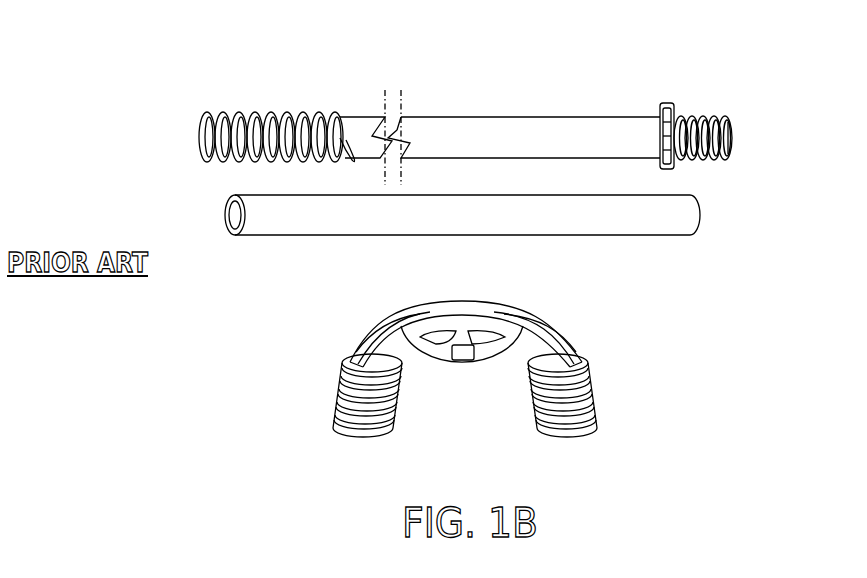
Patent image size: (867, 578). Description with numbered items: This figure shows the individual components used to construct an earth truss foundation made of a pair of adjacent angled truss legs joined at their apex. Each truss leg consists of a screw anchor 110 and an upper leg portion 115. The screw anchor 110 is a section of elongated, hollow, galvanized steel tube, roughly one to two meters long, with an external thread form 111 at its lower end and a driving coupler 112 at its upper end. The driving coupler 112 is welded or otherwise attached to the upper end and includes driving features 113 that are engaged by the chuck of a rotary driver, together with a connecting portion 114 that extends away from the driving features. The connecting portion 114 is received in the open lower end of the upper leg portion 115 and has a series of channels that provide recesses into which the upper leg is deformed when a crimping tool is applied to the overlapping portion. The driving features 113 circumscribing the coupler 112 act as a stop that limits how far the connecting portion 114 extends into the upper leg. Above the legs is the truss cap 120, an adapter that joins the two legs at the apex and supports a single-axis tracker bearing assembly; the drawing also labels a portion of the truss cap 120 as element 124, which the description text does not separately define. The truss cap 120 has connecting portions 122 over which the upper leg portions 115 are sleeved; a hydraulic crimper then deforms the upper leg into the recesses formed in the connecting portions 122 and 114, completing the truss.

The screw anchor 110 is at (513, 108).
The external thread form 111 is at (256, 106).
The driving coupler 112 is at (706, 104).
The driving features 113 is at (668, 104).
The connecting portion 114 is at (714, 162).
The upper leg portion 115 is at (622, 213).
The truss cap 120 is at (443, 338).
The connecting portions 122 is at (397, 423).
The handle arch 124 is at (462, 302).